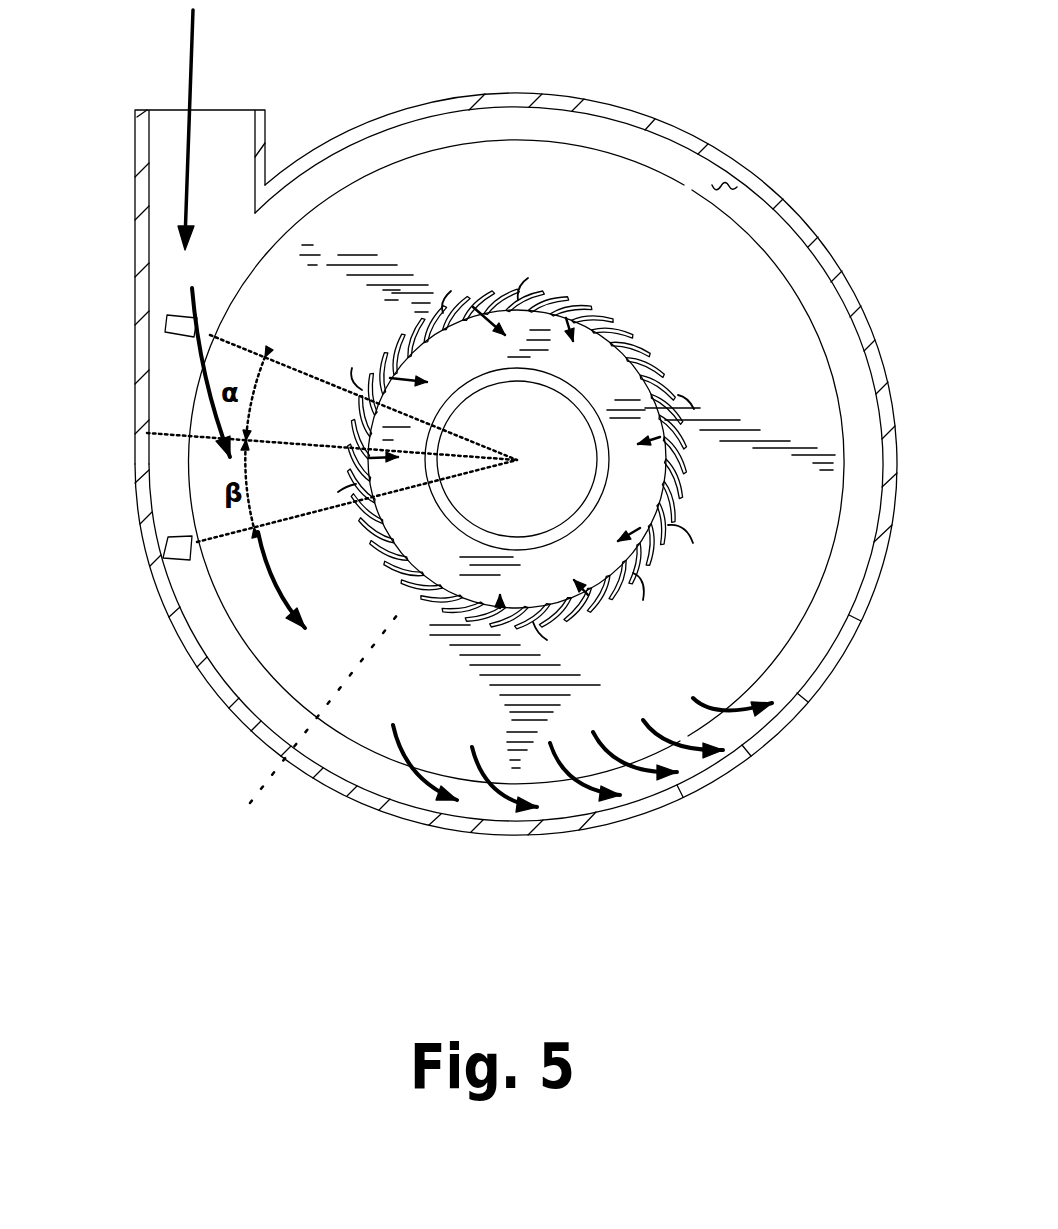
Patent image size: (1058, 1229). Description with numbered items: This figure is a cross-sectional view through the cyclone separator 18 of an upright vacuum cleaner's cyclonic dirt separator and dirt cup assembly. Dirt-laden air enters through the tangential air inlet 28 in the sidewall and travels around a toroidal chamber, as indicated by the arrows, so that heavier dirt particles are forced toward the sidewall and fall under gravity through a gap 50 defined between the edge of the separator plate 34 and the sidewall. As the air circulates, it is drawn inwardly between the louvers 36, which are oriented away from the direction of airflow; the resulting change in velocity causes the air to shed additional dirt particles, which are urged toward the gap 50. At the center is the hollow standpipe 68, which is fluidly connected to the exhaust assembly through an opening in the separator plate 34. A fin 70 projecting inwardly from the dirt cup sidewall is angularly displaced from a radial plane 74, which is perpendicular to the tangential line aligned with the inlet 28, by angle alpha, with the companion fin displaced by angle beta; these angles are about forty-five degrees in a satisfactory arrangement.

The cyclone separator 18 is at (845, 263).
The tangential air inlet 28 is at (230, 168).
The separator plate 34 is at (762, 287).
The louvers 36 is at (688, 490).
The gap 50 is at (724, 176).
The hollow standpipe 68 is at (316, 732).
The fin 70 is at (180, 323).
The radial plane 74 is at (173, 433).